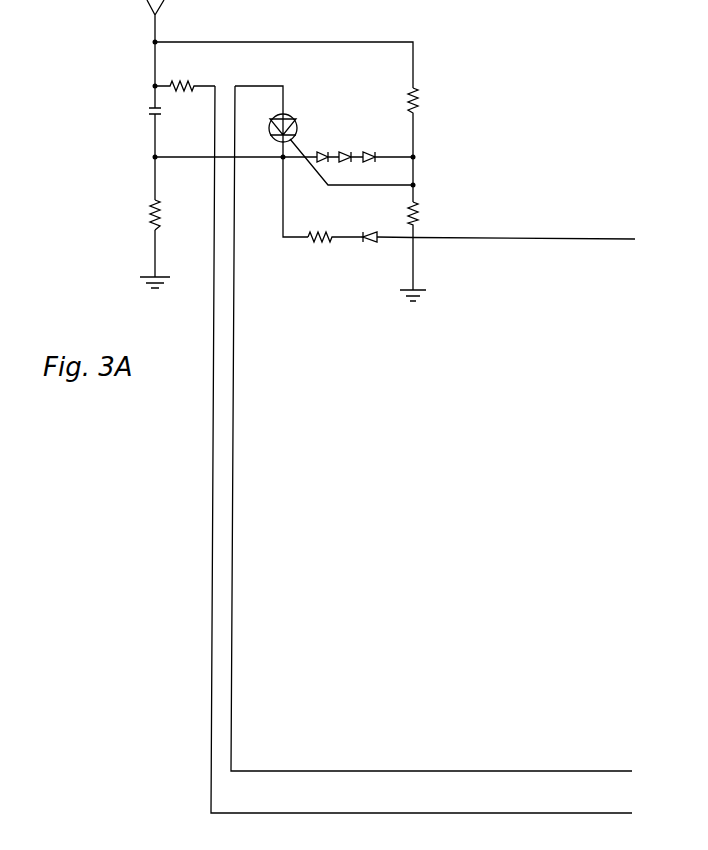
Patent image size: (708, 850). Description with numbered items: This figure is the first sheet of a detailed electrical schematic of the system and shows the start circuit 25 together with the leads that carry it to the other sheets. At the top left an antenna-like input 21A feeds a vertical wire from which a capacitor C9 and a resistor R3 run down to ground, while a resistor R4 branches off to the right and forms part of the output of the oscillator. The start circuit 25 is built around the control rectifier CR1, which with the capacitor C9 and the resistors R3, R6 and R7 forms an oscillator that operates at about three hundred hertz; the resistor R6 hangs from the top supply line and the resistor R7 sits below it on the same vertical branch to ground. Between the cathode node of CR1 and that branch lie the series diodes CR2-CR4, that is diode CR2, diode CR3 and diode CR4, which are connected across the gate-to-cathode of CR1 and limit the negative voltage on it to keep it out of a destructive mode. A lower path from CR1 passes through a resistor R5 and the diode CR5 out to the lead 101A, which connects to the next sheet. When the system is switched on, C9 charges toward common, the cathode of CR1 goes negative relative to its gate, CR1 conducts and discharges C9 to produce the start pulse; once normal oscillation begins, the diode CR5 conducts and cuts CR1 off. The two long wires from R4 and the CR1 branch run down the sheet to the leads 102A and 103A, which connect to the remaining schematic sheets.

The antenna 21A is at (148, 15).
The start circuit 25 is at (416, 31).
The resistor R3 is at (139, 215).
The resistor R4 is at (185, 78).
The resistor R5 is at (334, 248).
The resistor R6 is at (426, 145).
The resistor R7 is at (422, 251).
The capacitor C9 is at (139, 114).
The control rectifier CR1 is at (324, 135).
The diodes CR2-CR4 is at (365, 148).
The diode CR2 is at (328, 157).
The diode CR3 is at (351, 157).
The diode CR4 is at (388, 157).
The diode CR5 is at (366, 248).
The lead 101A is at (587, 239).
The lead 102A is at (575, 771).
The lead 103A is at (568, 813).